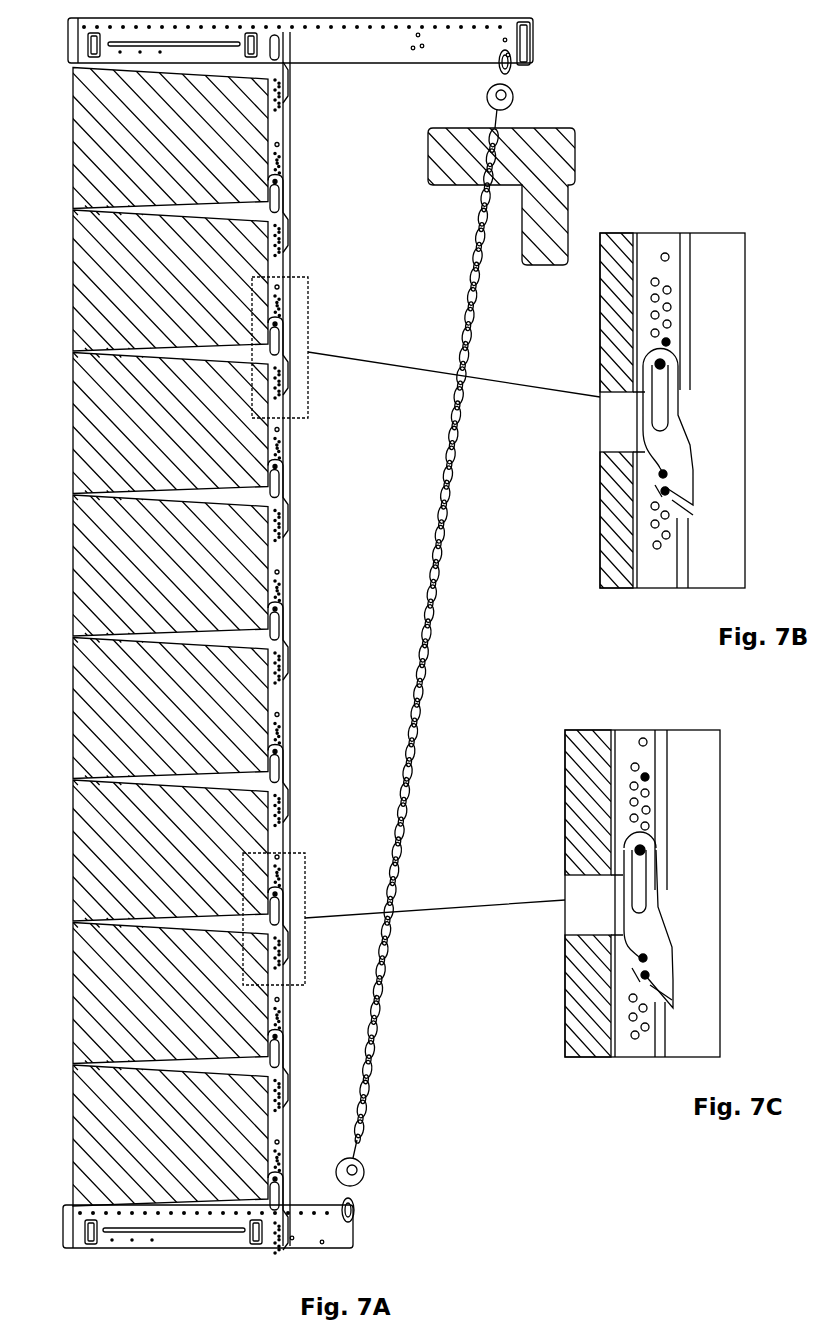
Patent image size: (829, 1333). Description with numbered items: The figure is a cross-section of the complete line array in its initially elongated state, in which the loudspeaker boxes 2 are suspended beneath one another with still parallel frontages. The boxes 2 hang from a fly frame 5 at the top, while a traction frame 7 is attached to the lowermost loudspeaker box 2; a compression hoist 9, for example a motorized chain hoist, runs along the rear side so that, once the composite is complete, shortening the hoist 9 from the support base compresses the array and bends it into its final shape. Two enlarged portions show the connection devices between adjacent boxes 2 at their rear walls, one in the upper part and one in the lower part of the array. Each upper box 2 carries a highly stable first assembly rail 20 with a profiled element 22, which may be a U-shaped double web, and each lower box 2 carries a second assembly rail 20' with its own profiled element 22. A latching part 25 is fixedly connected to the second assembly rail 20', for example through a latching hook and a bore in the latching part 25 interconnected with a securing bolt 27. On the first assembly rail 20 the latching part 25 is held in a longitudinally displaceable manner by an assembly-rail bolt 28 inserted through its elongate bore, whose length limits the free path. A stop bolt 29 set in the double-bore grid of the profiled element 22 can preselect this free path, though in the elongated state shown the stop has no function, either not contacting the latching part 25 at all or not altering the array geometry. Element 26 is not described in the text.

In FIG. 7A, the loudspeaker box 2 is at (73, 95).
In FIG. 7A, the fly frame 5 is at (388, 63).
In FIG. 7A, the traction frame 7 is at (340, 1233).
In FIG. 7A, the compression hoist 9 is at (386, 962).
In FIG. 7B, the first assembly rail 20 is at (708, 301).
In FIG. 7C, the first assembly rail 20 is at (688, 796).
In FIG. 7B, the second assembly rail 20' is at (705, 553).
In FIG. 7C, the second assembly rail 20' is at (684, 1029).
In FIG. 7B, the profiled element 22 is at (657, 243).
In FIG. 7C, the profiled element 22 is at (627, 736).
In FIG. 7B, the latching part 25 is at (652, 447).
In FIG. 7C, the latching part 25 is at (625, 930).
In FIG. 7B, the pin 26 is at (668, 474).
In FIG. 7C, the pin 26 is at (648, 957).
In FIG. 7B, the securing bolt 27 is at (660, 491).
In FIG. 7C, the securing bolt 27 is at (640, 975).
In FIG. 7B, the assembly-rail bolt 28 is at (668, 366).
In FIG. 7C, the assembly-rail bolt 28 is at (648, 850).
In FIG. 7B, the stop bolt 29 is at (670, 344).
In FIG. 7C, the stop bolt 29 is at (652, 776).